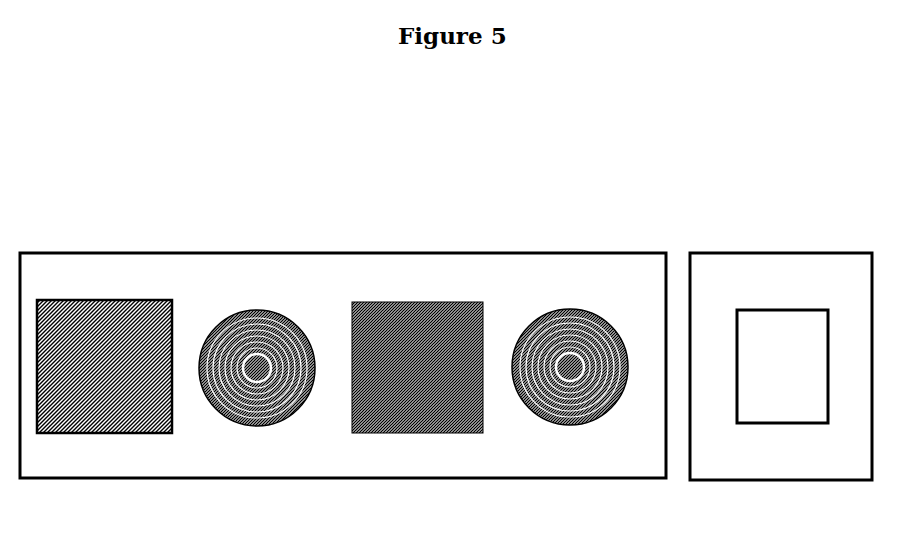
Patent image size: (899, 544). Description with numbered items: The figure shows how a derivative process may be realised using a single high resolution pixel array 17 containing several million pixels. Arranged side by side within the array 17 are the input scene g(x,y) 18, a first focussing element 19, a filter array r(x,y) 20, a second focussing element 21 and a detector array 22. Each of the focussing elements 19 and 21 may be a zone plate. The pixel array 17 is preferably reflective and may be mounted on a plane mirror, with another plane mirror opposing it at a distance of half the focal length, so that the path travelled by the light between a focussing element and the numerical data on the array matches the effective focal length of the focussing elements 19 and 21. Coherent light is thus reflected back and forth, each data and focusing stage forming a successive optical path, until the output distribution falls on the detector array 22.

The high resolution pixel array 17 is at (82, 251).
The input scene g(x,y) 18 is at (117, 298).
The first focussing element 19 is at (256, 310).
The filter array r(x,y) 20 is at (410, 301).
The second focussing element 21 is at (572, 309).
The detector array 22 is at (768, 308).